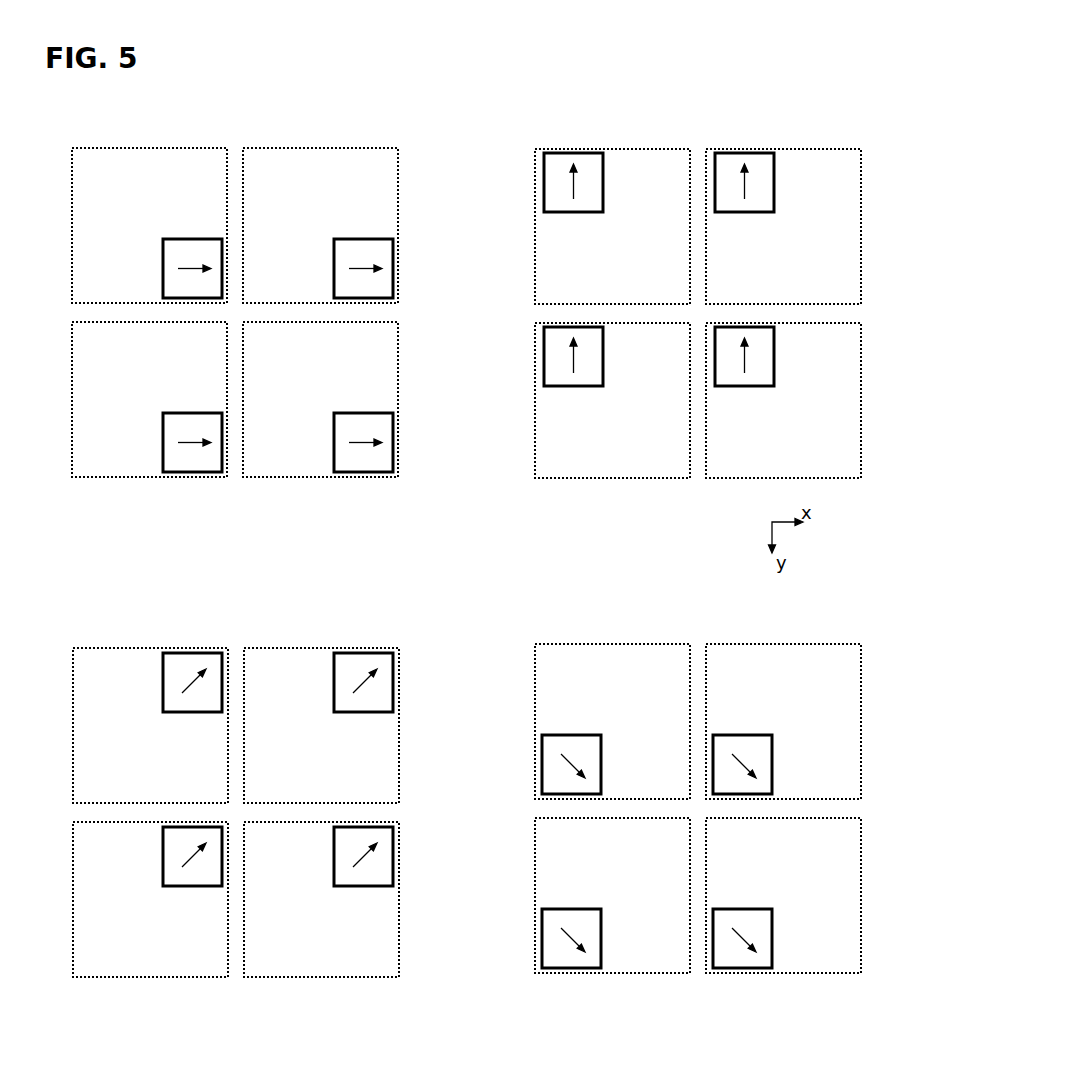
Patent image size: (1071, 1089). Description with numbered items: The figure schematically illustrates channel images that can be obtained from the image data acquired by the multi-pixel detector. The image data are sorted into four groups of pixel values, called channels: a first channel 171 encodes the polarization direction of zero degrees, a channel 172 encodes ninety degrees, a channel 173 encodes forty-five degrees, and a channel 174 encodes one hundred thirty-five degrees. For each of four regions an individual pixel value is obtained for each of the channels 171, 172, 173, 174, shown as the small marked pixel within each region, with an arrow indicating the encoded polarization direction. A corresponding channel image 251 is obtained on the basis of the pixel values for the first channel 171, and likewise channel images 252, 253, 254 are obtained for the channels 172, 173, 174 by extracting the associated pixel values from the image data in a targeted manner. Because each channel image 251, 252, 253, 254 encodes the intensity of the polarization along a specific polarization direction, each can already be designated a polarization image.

The first channel 171 is at (455, 70).
The channel 172 is at (898, 70).
The channel 173 is at (455, 605).
The channel 174 is at (898, 605).
The channel image 251 is at (420, 163).
The channel image 252 is at (882, 163).
The channel image 253 is at (420, 658).
The channel image 254 is at (882, 658).